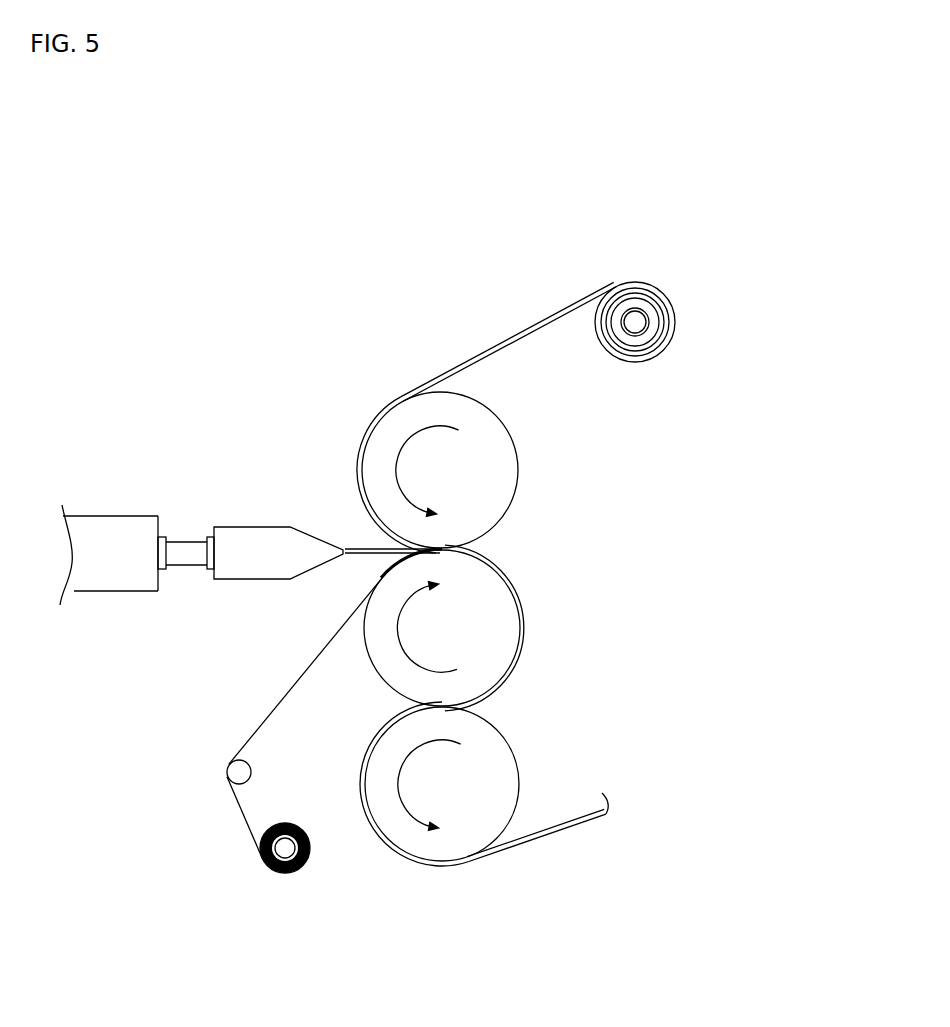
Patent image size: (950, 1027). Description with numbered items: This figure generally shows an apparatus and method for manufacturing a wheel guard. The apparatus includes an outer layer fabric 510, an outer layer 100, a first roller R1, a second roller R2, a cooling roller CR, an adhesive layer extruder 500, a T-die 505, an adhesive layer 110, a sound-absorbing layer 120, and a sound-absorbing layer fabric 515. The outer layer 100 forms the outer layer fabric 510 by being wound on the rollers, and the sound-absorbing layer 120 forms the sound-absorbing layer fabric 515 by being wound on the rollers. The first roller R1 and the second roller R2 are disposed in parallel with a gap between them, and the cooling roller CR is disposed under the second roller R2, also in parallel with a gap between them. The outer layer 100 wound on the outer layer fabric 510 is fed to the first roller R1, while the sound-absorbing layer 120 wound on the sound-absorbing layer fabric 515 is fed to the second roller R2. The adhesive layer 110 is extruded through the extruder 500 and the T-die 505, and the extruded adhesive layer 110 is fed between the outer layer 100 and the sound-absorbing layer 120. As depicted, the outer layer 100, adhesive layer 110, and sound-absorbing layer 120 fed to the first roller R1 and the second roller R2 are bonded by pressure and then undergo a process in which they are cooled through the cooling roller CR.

The outer layer 100 is at (496, 352).
The adhesive layer 110 is at (355, 558).
The sound-absorbing layer 120 is at (240, 815).
The adhesive layer extruder 500 is at (110, 521).
The T-die 505 is at (244, 534).
The outer layer fabric 510 is at (672, 286).
The sound-absorbing layer fabric 515 is at (268, 886).
The first roller R1 is at (510, 470).
The second roller R2 is at (505, 630).
The cooling roller CR is at (505, 765).